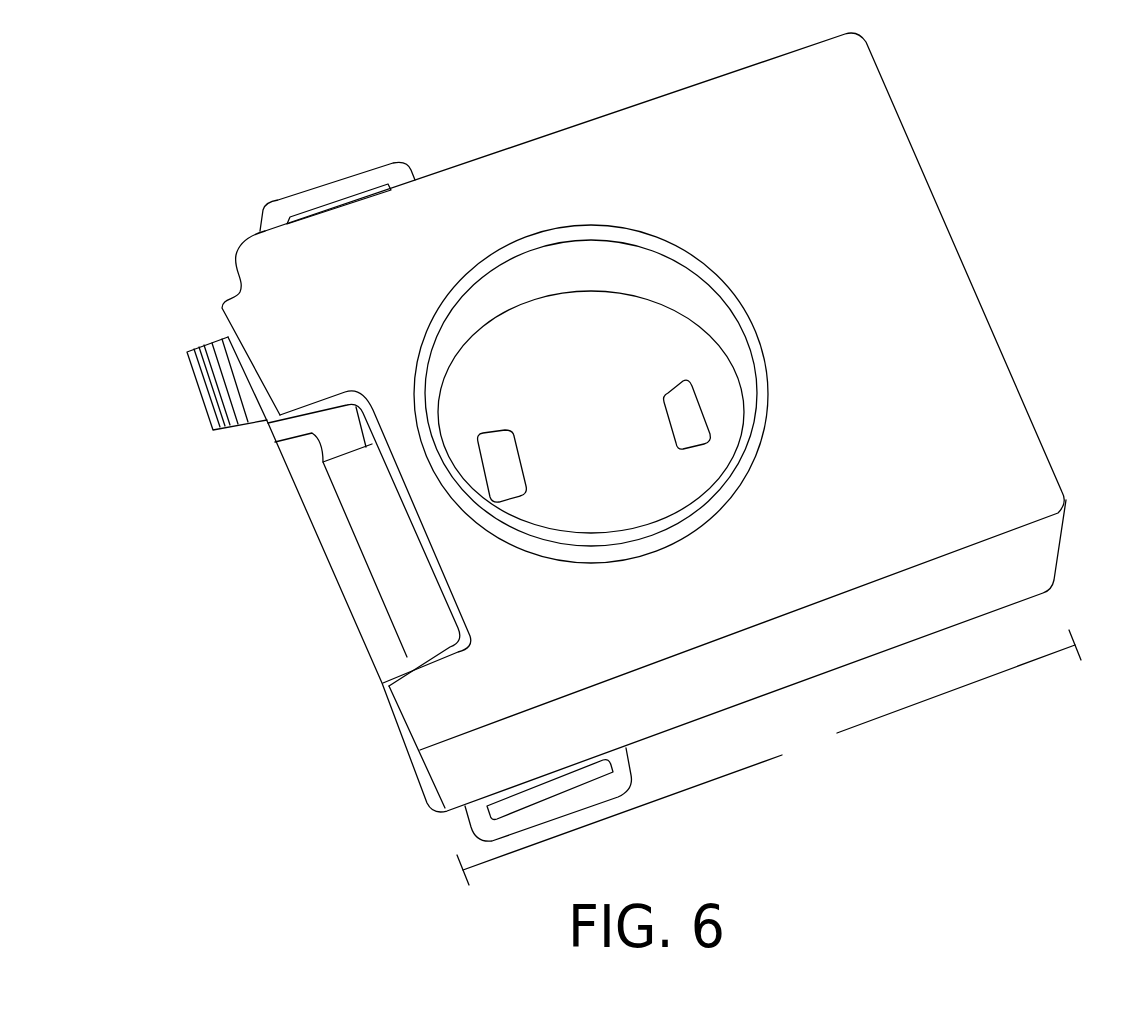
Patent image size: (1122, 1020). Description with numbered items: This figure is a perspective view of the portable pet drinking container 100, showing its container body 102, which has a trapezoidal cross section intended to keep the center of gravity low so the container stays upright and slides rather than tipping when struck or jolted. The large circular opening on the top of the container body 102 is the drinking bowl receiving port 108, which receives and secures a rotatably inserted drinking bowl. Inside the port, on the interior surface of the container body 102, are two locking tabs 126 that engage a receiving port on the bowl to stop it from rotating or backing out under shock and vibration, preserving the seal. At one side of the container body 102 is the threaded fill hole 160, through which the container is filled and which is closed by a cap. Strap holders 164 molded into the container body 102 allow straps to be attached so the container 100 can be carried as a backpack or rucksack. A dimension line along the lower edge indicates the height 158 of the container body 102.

The portable pet drinking container 100 is at (967, 158).
The container body 102 is at (993, 418).
The drinking bowl receiving port 108 is at (601, 224).
The locking tab 126 is at (515, 443).
The height 158 is at (769, 757).
The fill hole 160 is at (208, 417).
The strap holders 164 is at (368, 170).